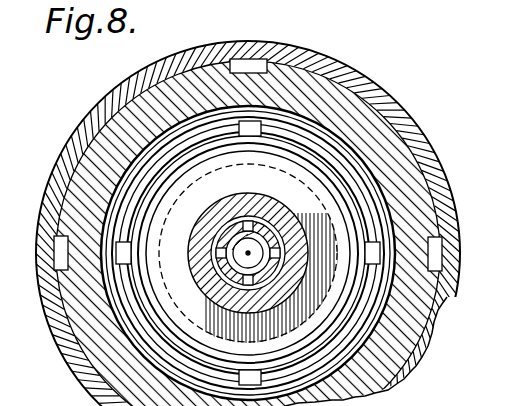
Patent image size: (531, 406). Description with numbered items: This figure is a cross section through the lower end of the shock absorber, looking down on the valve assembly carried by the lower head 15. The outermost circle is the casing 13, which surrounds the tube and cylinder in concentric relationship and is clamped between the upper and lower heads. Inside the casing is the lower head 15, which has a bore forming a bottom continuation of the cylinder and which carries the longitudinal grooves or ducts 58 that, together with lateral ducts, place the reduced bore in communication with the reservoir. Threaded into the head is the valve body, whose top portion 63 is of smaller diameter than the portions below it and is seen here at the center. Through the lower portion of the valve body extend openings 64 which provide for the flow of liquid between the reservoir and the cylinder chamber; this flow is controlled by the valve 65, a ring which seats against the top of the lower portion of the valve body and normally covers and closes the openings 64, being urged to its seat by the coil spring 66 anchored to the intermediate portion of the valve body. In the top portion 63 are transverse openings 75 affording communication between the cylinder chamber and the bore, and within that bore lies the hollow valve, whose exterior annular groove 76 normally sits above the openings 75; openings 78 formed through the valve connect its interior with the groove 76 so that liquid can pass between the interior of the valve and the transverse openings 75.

The casing 13 is at (357, 82).
The lower head 15 is at (100, 344).
The longitudinal grooves or ducts 58 is at (253, 65).
The top portion of the valve body 63 is at (213, 215).
The openings 64 is at (113, 227).
The valve 65 is at (148, 160).
The coil spring 66 is at (338, 153).
The transverse openings 75 is at (246, 202).
The exterior annular groove 76 is at (268, 214).
The openings 78 is at (228, 243).